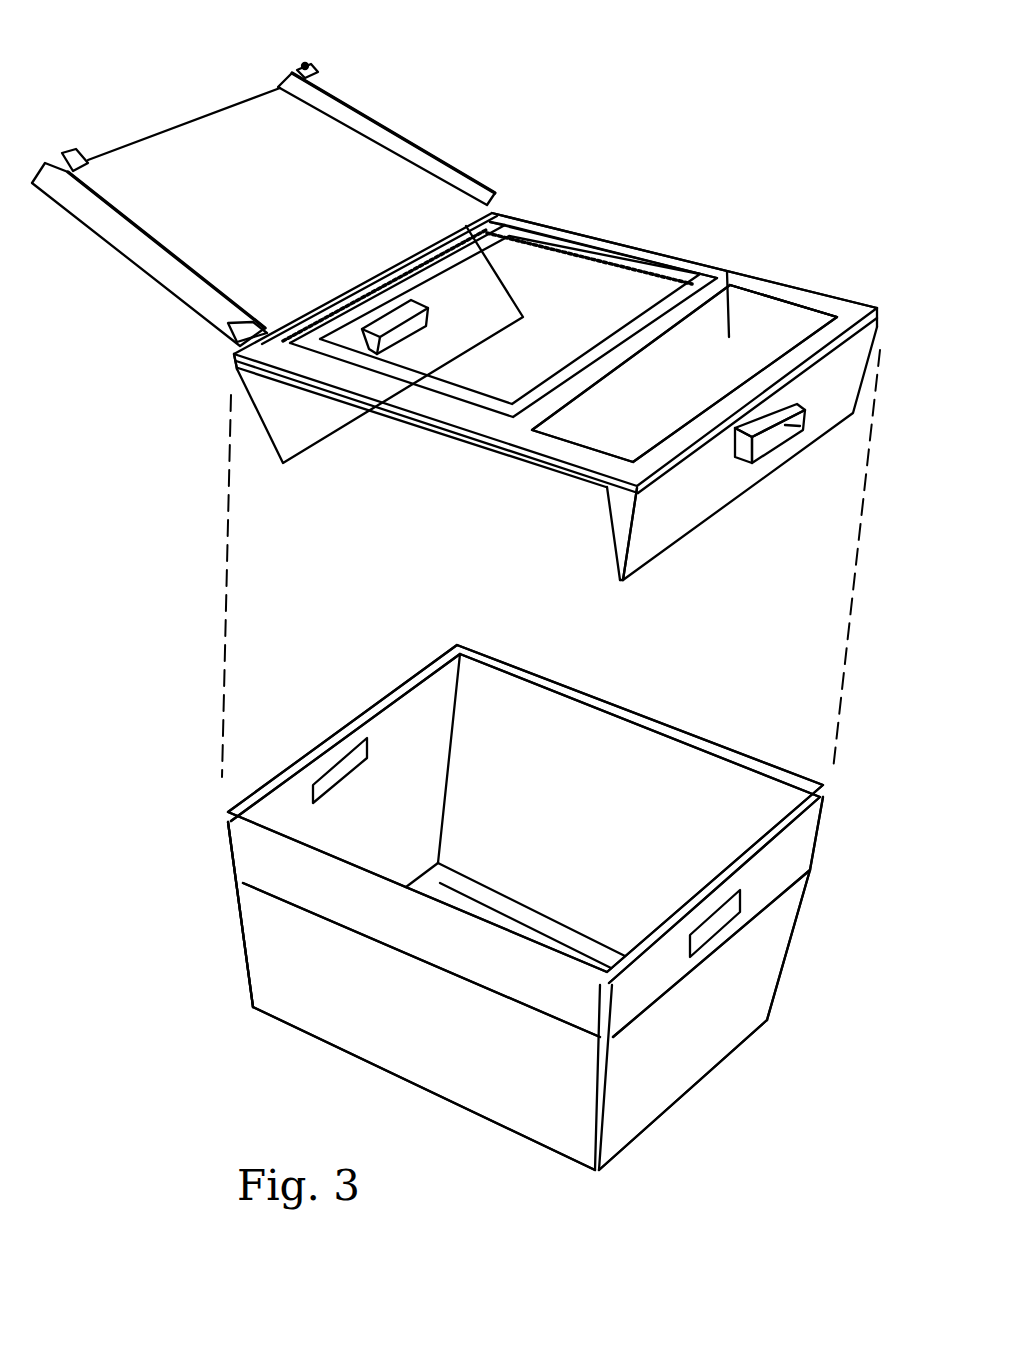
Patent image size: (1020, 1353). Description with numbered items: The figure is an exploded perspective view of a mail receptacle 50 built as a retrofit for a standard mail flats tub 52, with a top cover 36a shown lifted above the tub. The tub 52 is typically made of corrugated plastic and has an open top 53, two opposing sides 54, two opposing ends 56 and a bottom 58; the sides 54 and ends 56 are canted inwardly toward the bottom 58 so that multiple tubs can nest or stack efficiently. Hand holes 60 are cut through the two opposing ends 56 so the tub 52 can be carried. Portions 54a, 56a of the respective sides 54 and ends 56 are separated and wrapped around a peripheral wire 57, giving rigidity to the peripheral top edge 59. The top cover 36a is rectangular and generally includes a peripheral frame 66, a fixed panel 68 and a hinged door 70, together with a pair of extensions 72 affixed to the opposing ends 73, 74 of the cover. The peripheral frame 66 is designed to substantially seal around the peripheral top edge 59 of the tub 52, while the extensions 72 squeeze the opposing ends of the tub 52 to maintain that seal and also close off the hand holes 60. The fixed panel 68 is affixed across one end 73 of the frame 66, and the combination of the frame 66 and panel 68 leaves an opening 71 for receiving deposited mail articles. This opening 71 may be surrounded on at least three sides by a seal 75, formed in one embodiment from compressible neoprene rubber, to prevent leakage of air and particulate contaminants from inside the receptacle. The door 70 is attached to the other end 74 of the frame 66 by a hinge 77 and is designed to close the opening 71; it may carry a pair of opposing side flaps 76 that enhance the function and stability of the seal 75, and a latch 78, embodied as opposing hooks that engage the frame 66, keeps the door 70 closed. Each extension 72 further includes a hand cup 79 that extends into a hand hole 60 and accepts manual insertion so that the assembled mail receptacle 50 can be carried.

The mail receptacle 50 is at (107, 587).
The standard mail flats tub 52 is at (258, 962).
The open top 53 is at (484, 682).
The opposing sides 54 is at (630, 772).
The portions of sides 54a is at (280, 873).
The opposing ends 56 is at (412, 702).
The portions of ends 56a is at (798, 832).
The peripheral wire 57 is at (223, 815).
The bottom 58 is at (473, 903).
The peripheral top edge 59 is at (740, 747).
The hand holes 60 is at (350, 748).
The peripheral frame 66 is at (827, 310).
The fixed panel 68 is at (728, 262).
The top cover 36a is at (773, 276).
The hinged door 70 is at (180, 297).
The opening 71 is at (531, 262).
The extensions 72 is at (318, 437).
The end of top cover 73 is at (606, 488).
The end of top cover 74 is at (240, 372).
The seal 75 is at (607, 243).
The side flaps 76 is at (116, 226).
The hinge 77 is at (497, 210).
The latch 78 is at (86, 156).
The hand cup 79 is at (418, 330).